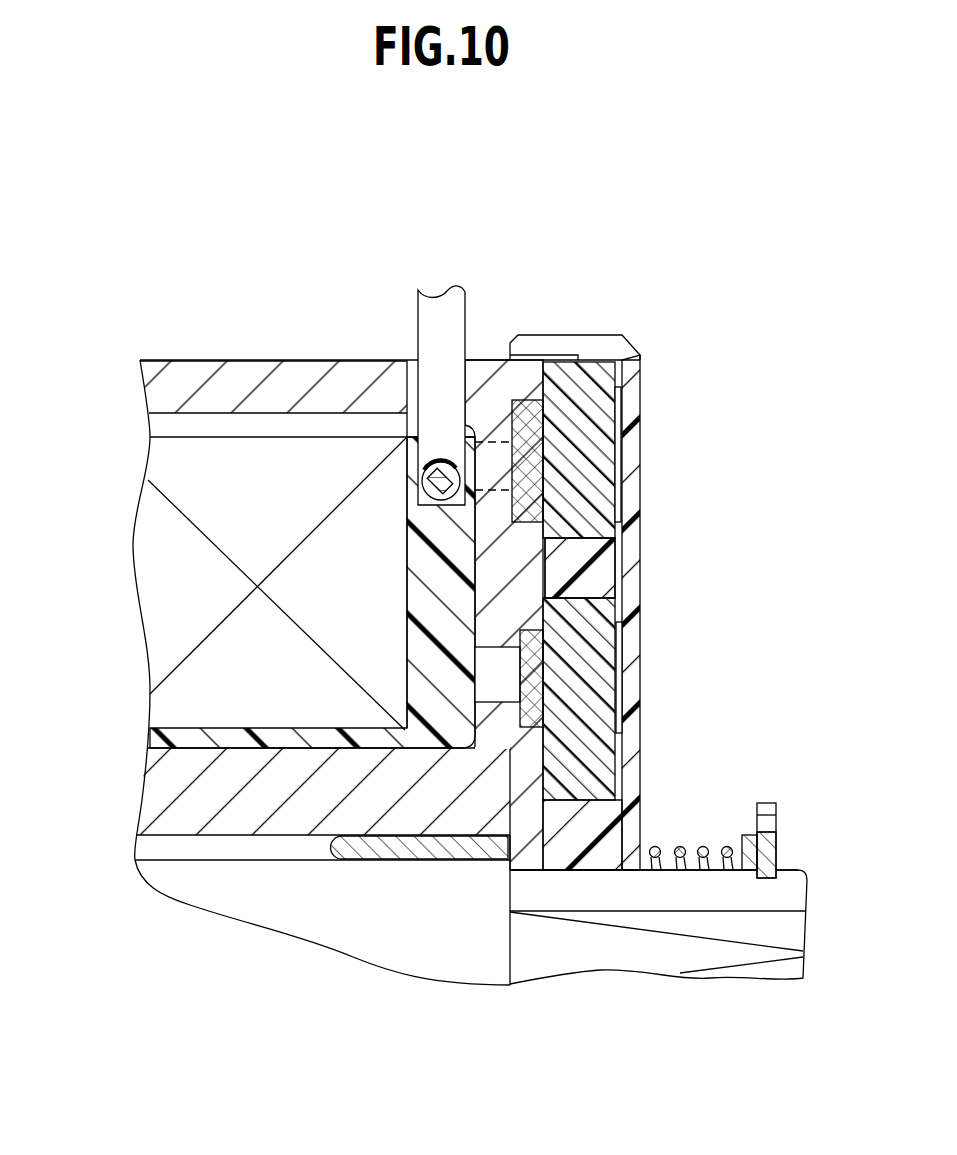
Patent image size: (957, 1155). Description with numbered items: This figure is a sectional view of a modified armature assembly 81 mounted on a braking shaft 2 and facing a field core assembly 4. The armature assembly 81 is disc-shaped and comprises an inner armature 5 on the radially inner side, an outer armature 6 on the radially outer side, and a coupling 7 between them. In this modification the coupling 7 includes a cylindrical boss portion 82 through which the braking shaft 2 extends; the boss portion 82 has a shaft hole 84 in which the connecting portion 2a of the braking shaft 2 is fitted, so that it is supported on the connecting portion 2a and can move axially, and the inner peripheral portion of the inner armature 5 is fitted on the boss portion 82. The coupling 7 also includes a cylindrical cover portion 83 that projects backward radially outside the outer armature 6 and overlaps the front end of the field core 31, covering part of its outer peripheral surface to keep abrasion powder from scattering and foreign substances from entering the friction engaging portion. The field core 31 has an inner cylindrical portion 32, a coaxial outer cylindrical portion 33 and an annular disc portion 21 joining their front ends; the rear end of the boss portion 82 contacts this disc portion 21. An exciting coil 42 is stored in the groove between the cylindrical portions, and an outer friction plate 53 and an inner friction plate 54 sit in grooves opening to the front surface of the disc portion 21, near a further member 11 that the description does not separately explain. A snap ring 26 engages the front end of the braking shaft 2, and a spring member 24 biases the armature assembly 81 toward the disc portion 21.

The braking shaft 2 is at (317, 917).
The connecting portion 2a is at (798, 887).
The field core assembly 4 is at (186, 353).
The inner armature 5 is at (620, 643).
The outer armature 6 is at (620, 458).
The coupling 7 is at (640, 538).
The partition wall 11 is at (582, 548).
The disc portion 21 is at (498, 607).
The spring member 24 is at (705, 884).
The snap ring 26 is at (778, 855).
The field core 31 is at (283, 360).
The inner cylindrical portion 32 is at (188, 807).
The outer cylindrical portion 33 is at (213, 385).
The exciting coil 42 is at (193, 578).
The outer friction plate 53 is at (590, 688).
The inner friction plate 54 is at (585, 422).
The armature assembly 81 is at (660, 381).
The boss portion 82 is at (592, 825).
The cover portion 83 is at (548, 342).
The shaft hole 84 is at (592, 870).